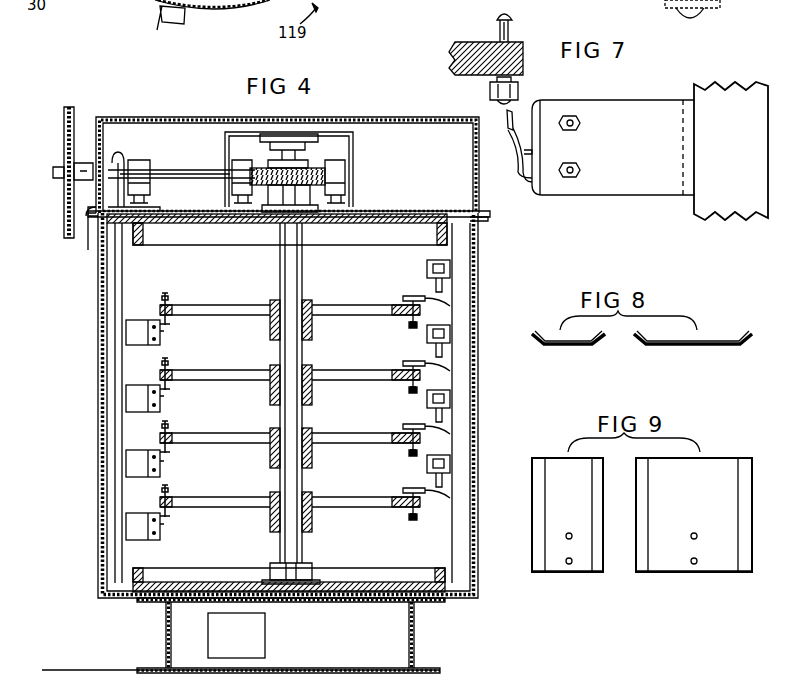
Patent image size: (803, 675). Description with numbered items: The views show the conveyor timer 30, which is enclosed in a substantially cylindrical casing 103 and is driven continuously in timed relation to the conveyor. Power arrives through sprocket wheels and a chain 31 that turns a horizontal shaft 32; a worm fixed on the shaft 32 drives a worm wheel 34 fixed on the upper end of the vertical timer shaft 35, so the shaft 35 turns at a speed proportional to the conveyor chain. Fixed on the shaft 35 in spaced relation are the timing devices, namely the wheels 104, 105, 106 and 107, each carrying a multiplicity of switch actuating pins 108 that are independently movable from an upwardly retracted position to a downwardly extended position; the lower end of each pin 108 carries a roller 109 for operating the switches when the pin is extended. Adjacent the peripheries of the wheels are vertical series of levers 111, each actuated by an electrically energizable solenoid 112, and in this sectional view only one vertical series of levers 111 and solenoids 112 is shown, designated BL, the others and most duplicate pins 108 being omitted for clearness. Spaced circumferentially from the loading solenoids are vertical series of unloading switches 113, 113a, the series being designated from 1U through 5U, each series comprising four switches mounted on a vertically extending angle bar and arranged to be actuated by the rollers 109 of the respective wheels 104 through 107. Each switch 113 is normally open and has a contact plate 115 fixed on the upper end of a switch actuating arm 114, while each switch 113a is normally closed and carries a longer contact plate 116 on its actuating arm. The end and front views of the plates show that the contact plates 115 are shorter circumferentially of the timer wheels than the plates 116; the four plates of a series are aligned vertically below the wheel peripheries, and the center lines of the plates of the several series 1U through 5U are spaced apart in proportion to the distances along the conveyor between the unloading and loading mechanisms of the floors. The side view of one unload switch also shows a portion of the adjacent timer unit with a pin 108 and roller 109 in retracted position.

In FIG. 4, the timer 30 is at (84, 345).
In FIG. 4, the chain 31 is at (63, 215).
In FIG. 4, the shaft 32 is at (178, 170).
In FIG. 4, the worm wheel 34 is at (315, 165).
In FIG. 4, the vertical timer shaft 35 is at (292, 268).
In FIG. 4, the series of unloading switches 1U is at (113, 303).
In FIG. 4, the series of pin actuating levers and solenoids BL is at (463, 247).
In FIG. 4, the casing 103 is at (100, 428).
In FIG. 4, the wheel 104 is at (240, 497).
In FIG. 4, the wheel 105 is at (233, 433).
In FIG. 4, the wheel 106 is at (226, 370).
In FIG. 4, the wheel 107 is at (228, 305).
In FIG. 4, the pin 108 is at (168, 298).
In FIG. 7, the pin 108 is at (510, 24).
In FIG. 4, the roller 109 is at (408, 325).
In FIG. 7, the roller 109 is at (518, 92).
In FIG. 4, the lever 111 is at (418, 296).
In FIG. 4, the solenoid 112 is at (450, 270).
In FIG. 4, the unloading switch 113 is at (137, 396).
In FIG. 7, the unloading switch 113 is at (632, 116).
In FIG. 4, the unloading switch 113a is at (137, 330).
In FIG. 4, the switch actuating arm 114 is at (161, 332).
In FIG. 7, the switch actuating arm 114 is at (513, 140).
In FIG. 8, the contact plate 115 is at (578, 346).
In FIG. 9, the contact plate 115 is at (567, 515).
In FIG. 8, the contact plate 116 is at (706, 346).
In FIG. 9, the contact plate 116 is at (694, 515).
In FIG. 7, the series of unloading switches 5U is at (724, 197).